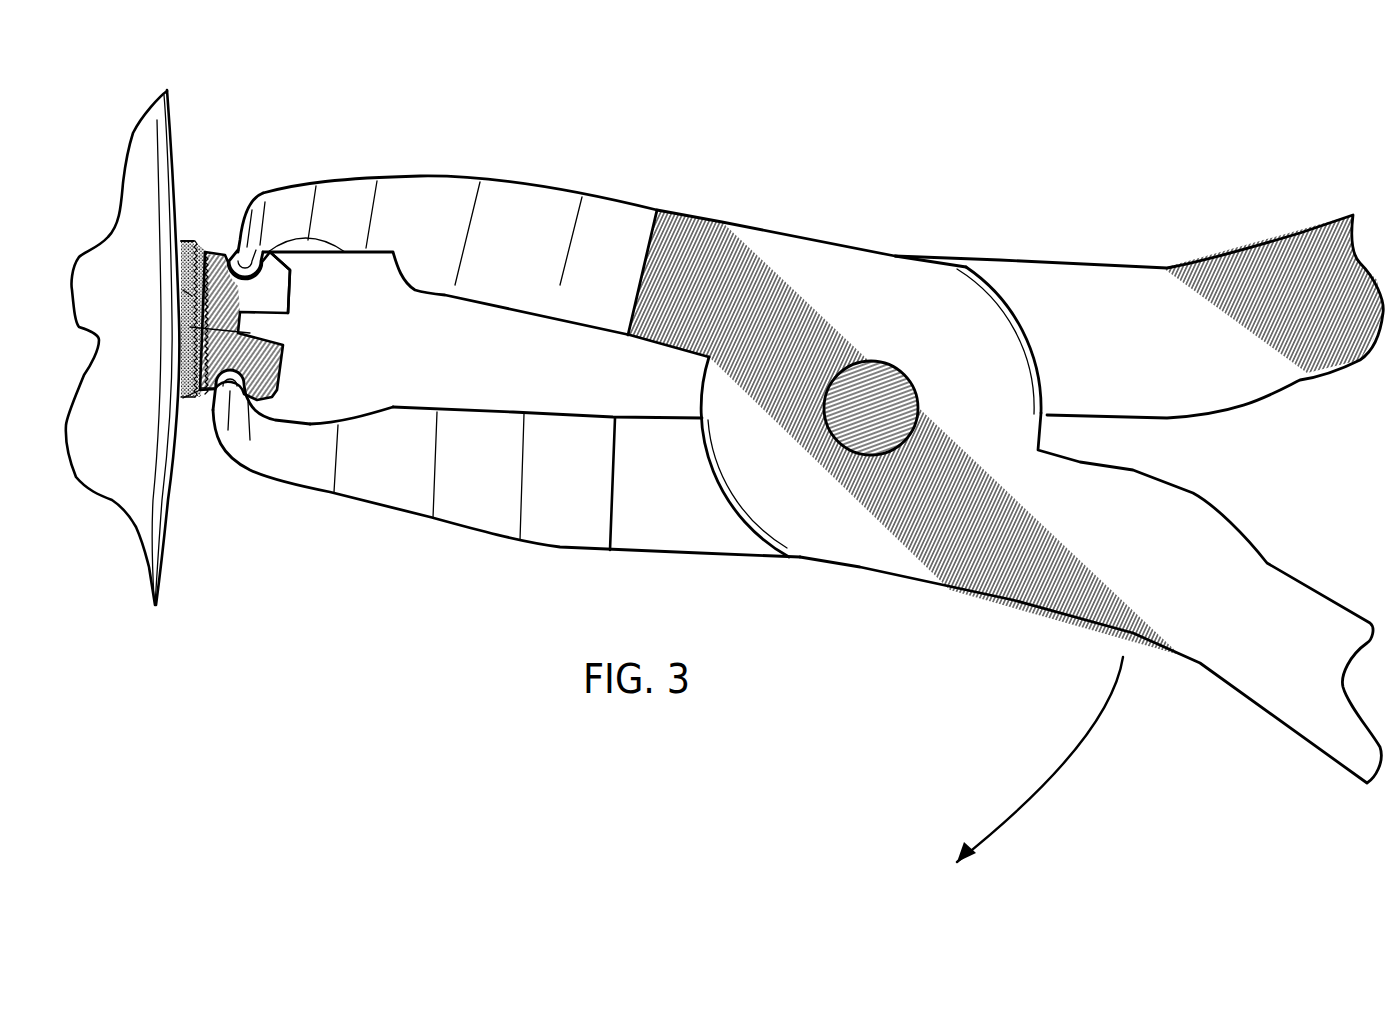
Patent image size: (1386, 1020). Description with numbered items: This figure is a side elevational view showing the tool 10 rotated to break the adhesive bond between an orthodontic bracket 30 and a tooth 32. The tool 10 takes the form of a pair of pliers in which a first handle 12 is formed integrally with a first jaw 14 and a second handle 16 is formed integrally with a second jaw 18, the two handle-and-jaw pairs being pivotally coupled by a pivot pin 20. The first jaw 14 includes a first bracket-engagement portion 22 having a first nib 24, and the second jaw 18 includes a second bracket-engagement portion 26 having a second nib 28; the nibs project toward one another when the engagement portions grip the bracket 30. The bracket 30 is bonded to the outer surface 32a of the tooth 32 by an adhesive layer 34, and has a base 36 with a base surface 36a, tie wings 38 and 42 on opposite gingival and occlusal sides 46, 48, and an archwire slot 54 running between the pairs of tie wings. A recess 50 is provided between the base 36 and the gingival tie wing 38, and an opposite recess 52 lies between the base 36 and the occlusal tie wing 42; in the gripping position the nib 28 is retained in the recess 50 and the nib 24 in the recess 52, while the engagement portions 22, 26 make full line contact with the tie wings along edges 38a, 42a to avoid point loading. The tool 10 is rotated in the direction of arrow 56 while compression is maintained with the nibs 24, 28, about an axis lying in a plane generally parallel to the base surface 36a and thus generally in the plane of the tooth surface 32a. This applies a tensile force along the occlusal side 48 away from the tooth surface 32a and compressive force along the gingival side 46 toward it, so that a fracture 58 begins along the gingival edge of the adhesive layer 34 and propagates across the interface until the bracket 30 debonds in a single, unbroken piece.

The tool 10 is at (895, 168).
The first handle 12 is at (1234, 256).
The first jaw 14 is at (648, 553).
The second handle 16 is at (1195, 494).
The second jaw 18 is at (510, 178).
The pivot pin 20 is at (867, 378).
The first bracket-engagement portion 22 is at (261, 478).
The first nib 24 is at (222, 398).
The second bracket-engagement portion 26 is at (283, 184).
The second nib 28 is at (240, 248).
The orthodontic bracket 30 is at (281, 292).
The tooth 32 is at (168, 92).
The outer surface of tooth 32a is at (176, 148).
The adhesive layer 34 is at (184, 343).
The base 36 is at (206, 372).
The base surface 36a is at (193, 362).
The tie wing 38 is at (298, 272).
The edge of tie wing 38a is at (334, 252).
The tie wing 42 is at (250, 408).
The edge of tie wing 42a is at (258, 421).
The gingival side 46 is at (197, 410).
The occlusal side 48 is at (198, 237).
The recess 50 is at (190, 258).
The recess 52 is at (215, 389).
The archwire slot 54 is at (190, 327).
The arrow 56 is at (1043, 768).
The fracture 58 is at (183, 293).